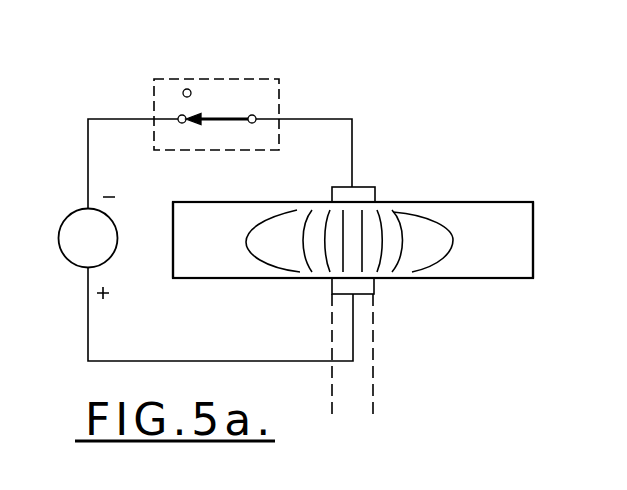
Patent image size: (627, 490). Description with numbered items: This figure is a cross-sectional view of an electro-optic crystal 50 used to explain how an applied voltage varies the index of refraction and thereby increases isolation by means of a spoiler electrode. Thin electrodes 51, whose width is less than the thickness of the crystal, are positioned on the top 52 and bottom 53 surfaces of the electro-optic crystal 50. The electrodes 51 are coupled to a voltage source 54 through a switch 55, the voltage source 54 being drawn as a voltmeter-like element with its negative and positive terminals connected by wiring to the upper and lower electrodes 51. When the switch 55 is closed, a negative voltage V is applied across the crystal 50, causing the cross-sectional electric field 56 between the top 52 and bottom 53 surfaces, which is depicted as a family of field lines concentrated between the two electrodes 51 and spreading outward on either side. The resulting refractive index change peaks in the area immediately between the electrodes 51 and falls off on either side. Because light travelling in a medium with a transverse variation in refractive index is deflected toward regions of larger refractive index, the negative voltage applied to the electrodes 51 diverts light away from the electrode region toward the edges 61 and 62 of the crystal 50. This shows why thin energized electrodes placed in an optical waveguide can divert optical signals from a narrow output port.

The electro-optic crystal 50 is at (228, 212).
The thin electrodes 51 is at (340, 187).
The top surface 52 is at (405, 208).
The bottom surface 53 is at (482, 279).
The voltage source 54 is at (68, 218).
The switch 55 is at (216, 78).
The cross-sectional electric field 56 is at (405, 223).
The edge of the crystal 61 is at (172, 248).
The edge of the crystal 62 is at (534, 217).